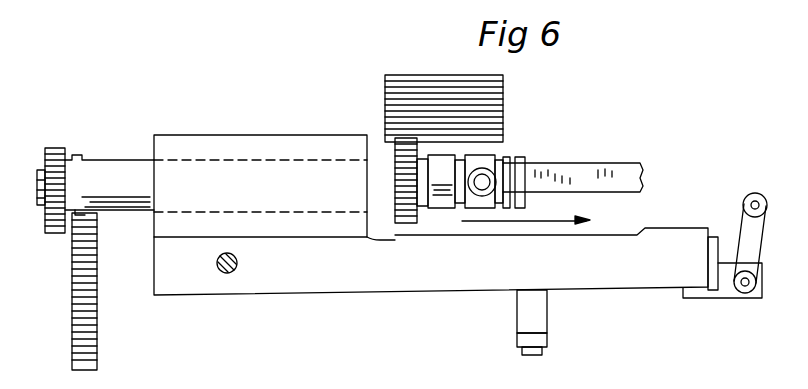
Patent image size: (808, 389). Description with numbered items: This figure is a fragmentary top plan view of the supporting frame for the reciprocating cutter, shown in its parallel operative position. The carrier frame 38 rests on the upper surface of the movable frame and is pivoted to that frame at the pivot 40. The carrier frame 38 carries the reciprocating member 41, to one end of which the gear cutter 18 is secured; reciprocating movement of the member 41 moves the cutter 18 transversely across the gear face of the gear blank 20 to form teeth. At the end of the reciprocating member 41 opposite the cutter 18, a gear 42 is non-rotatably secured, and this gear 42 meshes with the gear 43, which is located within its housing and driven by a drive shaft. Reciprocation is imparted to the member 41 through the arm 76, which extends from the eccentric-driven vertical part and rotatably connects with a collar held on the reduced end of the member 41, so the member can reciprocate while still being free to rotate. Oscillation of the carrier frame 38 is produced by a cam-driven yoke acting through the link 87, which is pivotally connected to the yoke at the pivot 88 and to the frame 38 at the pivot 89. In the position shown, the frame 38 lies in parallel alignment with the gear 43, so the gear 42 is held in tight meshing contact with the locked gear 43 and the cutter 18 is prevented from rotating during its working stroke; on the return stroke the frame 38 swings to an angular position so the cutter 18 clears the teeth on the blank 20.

The gear cutter 18 is at (62, 148).
The gear blank 20 is at (100, 344).
The carrier frame 38 is at (468, 290).
The pivot 40 is at (227, 273).
The reciprocating member 41 is at (120, 170).
The gear 42 is at (410, 212).
The gear 43 is at (402, 77).
The arm 76 is at (597, 172).
The link 87 is at (755, 228).
The pivot 88 is at (752, 200).
The pivot 89 is at (745, 286).